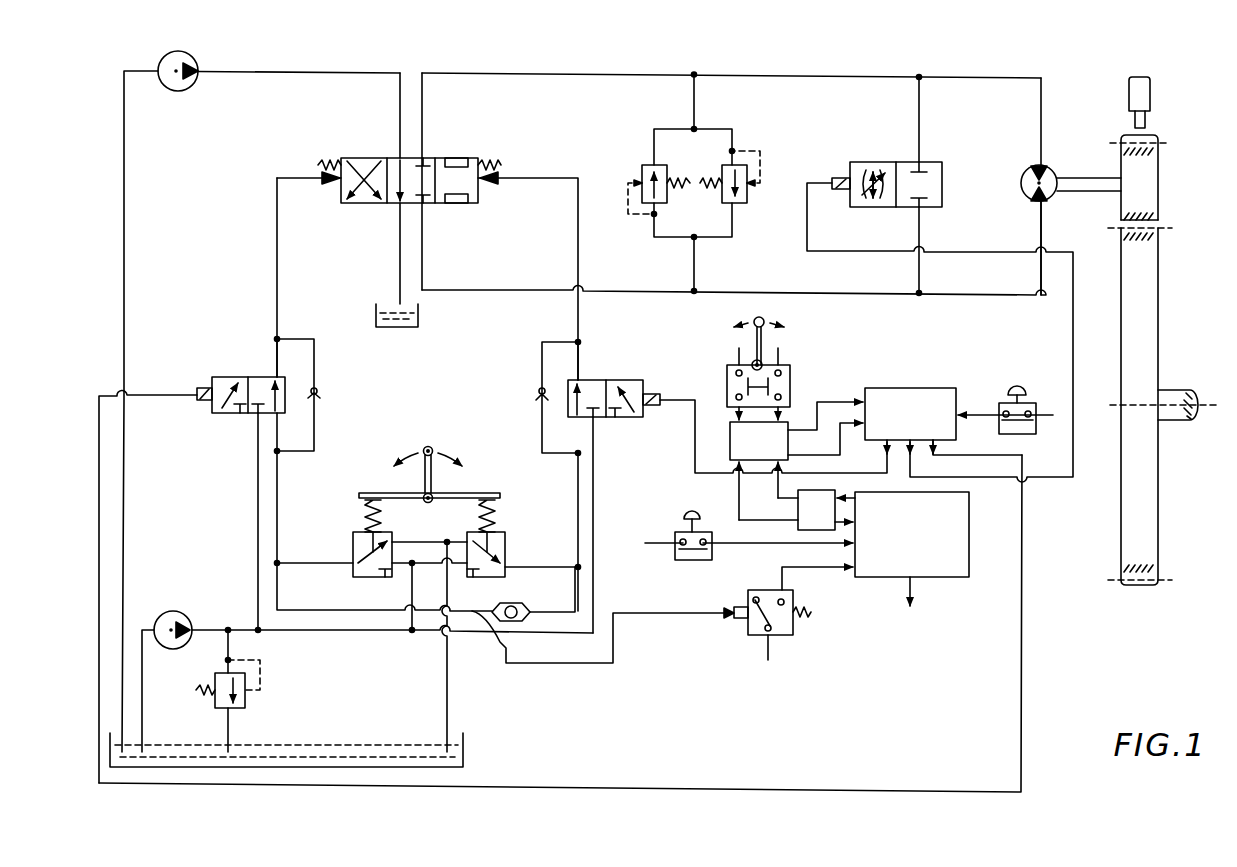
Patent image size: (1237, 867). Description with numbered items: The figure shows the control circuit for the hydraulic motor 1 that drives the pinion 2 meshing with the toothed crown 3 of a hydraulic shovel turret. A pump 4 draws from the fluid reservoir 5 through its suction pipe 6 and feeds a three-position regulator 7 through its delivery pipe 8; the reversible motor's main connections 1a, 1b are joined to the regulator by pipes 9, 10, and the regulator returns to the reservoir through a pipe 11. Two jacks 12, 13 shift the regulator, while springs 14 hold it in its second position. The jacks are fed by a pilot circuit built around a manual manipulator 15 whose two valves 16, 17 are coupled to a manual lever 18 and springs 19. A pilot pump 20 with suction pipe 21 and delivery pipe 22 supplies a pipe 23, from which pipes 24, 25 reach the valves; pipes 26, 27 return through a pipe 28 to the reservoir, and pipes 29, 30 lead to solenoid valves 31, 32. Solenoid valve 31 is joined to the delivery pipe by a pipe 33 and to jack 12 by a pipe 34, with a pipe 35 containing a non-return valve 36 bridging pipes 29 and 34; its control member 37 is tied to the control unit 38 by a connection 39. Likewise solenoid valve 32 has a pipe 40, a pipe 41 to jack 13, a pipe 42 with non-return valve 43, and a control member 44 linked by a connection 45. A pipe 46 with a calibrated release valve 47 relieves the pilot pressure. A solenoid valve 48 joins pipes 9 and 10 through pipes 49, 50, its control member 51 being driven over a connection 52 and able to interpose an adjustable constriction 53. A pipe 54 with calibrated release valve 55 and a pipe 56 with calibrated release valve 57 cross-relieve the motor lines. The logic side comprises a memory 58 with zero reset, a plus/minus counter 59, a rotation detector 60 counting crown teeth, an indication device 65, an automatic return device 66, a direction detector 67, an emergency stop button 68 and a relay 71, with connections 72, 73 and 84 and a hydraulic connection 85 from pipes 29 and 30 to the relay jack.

The hydraulic motor 1 is at (1057, 178).
The main connection 1a is at (1046, 166).
The main connection 1b is at (1046, 203).
The pinion 2 is at (1150, 173).
The toothed crown 3 is at (1145, 292).
The pump 4 is at (176, 92).
The fluid reservoir 5 is at (378, 305).
The suction pipe 6 is at (124, 202).
The three-position regulator 7 is at (443, 157).
The delivery pipe 8 is at (372, 75).
The pipe 9 is at (642, 76).
The pipe 10 is at (630, 293).
The pipe 11 is at (400, 250).
The jack 12 is at (330, 186).
The jack 13 is at (492, 190).
The springs 14 is at (326, 160).
The manual manipulator 15 is at (473, 488).
The valve 16 is at (353, 541).
The valve 17 is at (501, 549).
The manual lever 18 is at (428, 446).
The springs 19 is at (365, 513).
The pilot pump 20 is at (172, 611).
The suction pipe 21 is at (142, 668).
The delivery pipe 22 is at (258, 620).
The pipe 23 is at (410, 622).
The pipe 24 is at (401, 575).
The pipe 25 is at (459, 568).
The pipe 26 is at (418, 542).
The pipe 27 is at (447, 542).
The pipe 28 is at (447, 653).
The pipe 29 is at (281, 484).
The pipe 30 is at (578, 483).
The solenoid valve 31 is at (227, 375).
The solenoid valve 32 is at (612, 378).
The pipe 33 is at (258, 475).
The pipe 34 is at (277, 343).
The pipe 35 is at (314, 364).
The non-return valve 36 is at (320, 391).
The control member 37 is at (203, 402).
The control unit 38 is at (913, 386).
The connection 39 is at (1022, 616).
The pipe 40 is at (593, 491).
The pipe 41 is at (581, 347).
The pipe 42 is at (542, 351).
The non-return valve 43 is at (539, 391).
The control member 44 is at (657, 393).
The connection 45 is at (695, 437).
The pipe 46 is at (232, 646).
The calibrated release valve 47 is at (245, 695).
The solenoid valve 48 is at (946, 164).
The pipe 49 is at (919, 107).
The pipe 50 is at (919, 232).
The control member 51 is at (836, 178).
The connection 52 is at (807, 240).
The adjustable constriction 53 is at (878, 206).
The pipe 54 is at (694, 100).
The calibrated release valve 55 is at (740, 200).
The pipe 56 is at (654, 137).
The calibrated release valve 57 is at (642, 178).
The memory 58 is at (940, 580).
The plus/minus counter 59 is at (826, 510).
The detector 60 is at (1150, 90).
The device for indication of the choice of operation 65 is at (690, 562).
The device for control of automatic return 66 is at (792, 370).
The detector of the direction of rotation 67 is at (796, 461).
The emergency stop button 68 is at (1036, 403).
The relay 71 is at (795, 623).
The connection 72 is at (765, 544).
The connection 73 is at (808, 570).
The connection 84 is at (975, 412).
The connection 85 is at (570, 617).